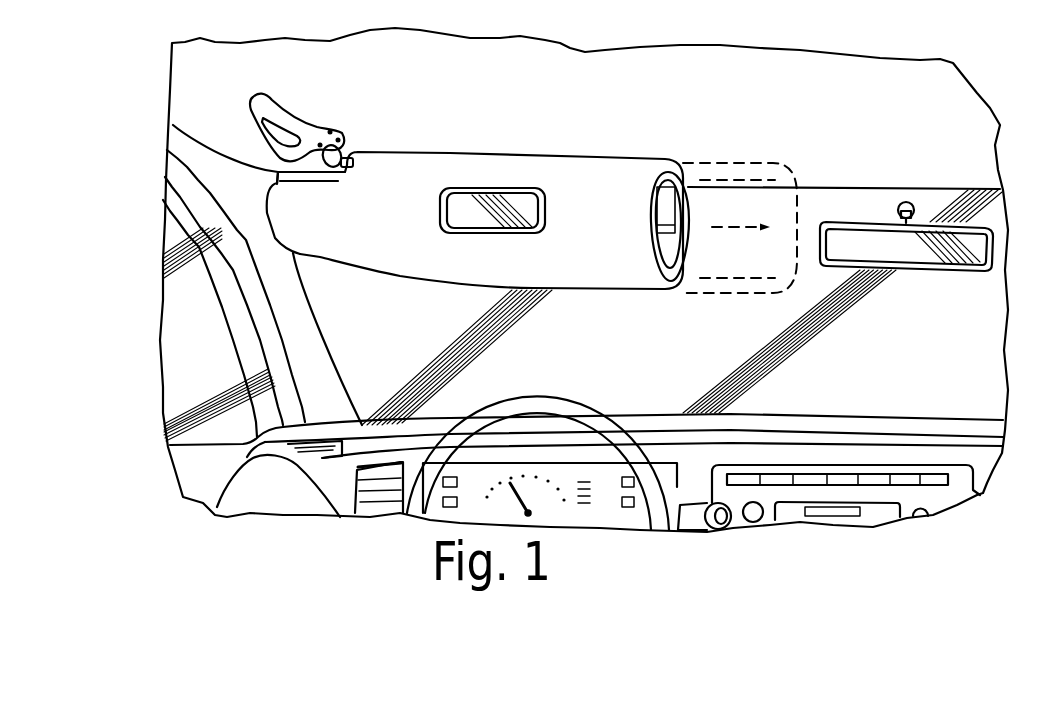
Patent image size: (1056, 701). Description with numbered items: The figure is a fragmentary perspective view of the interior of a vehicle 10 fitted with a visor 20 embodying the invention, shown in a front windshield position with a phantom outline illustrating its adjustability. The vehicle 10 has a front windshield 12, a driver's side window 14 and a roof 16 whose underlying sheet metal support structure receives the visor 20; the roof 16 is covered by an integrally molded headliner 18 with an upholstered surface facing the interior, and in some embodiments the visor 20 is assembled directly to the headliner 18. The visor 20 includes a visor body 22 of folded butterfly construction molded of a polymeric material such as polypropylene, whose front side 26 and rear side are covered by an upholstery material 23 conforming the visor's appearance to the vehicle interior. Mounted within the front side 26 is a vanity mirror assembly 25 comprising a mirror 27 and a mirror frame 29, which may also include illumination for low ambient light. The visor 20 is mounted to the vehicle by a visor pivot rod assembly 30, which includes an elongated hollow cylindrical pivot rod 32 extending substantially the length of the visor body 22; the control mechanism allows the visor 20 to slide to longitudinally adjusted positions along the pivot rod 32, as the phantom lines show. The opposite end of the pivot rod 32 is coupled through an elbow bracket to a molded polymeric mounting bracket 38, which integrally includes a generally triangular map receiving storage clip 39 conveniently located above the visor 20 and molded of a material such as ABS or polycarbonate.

The vehicle 10 is at (1023, 191).
The front windshield 12 is at (890, 367).
The driver's side window 14 is at (170, 355).
The roof 16 is at (572, 42).
The headliner 18 is at (467, 87).
The visor 20 is at (532, 227).
The visor body 22 is at (633, 290).
The upholstery material 23 is at (400, 212).
The vanity mirror assembly 25 is at (527, 226).
The front side 26 is at (360, 262).
The mirror 27 is at (516, 202).
The mirror frame 29 is at (546, 221).
The visor pivot rod assembly 30 is at (289, 85).
The pivot rod 32 is at (350, 160).
The mounting bracket 38 is at (291, 107).
The map receiving storage clip 39 is at (250, 117).